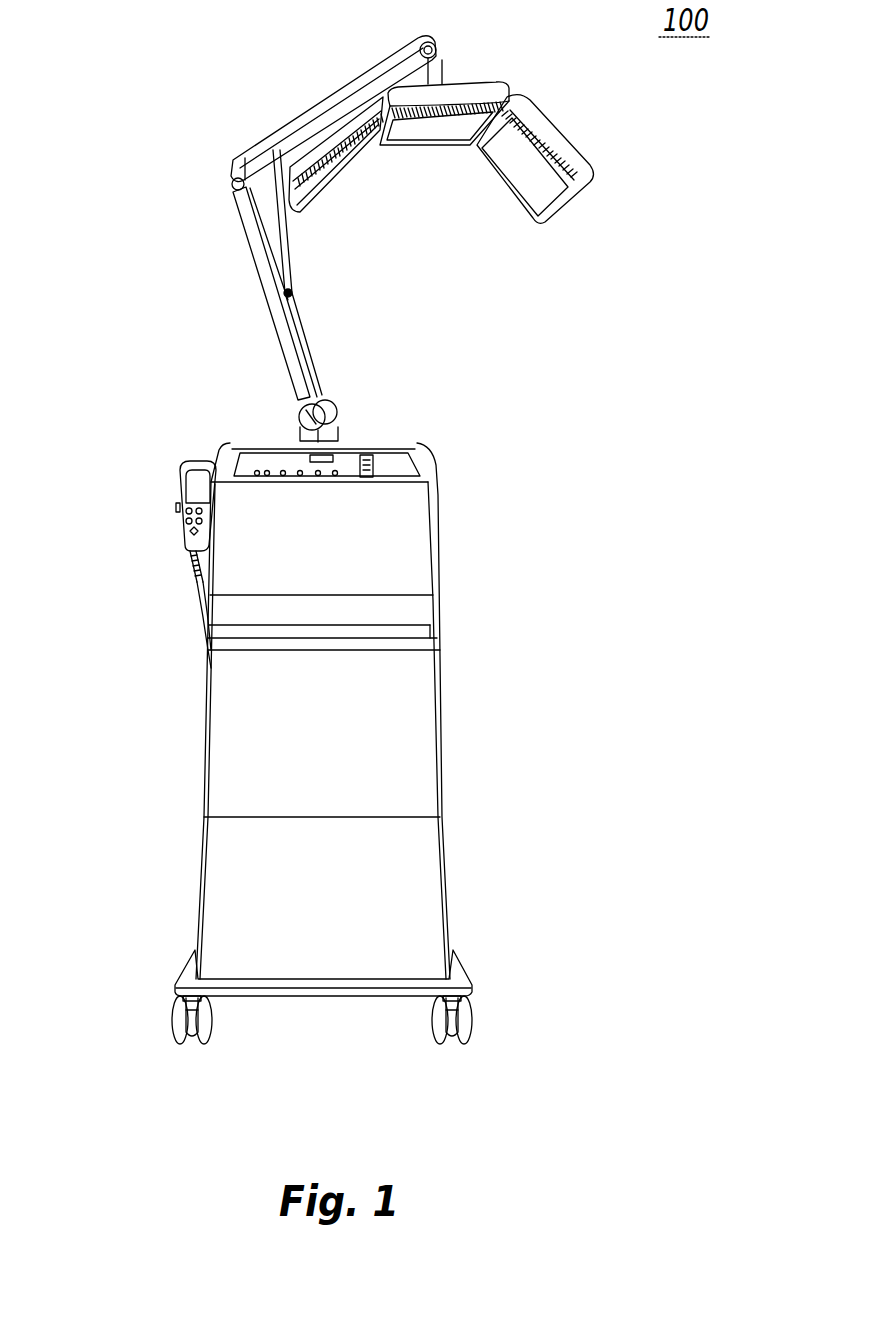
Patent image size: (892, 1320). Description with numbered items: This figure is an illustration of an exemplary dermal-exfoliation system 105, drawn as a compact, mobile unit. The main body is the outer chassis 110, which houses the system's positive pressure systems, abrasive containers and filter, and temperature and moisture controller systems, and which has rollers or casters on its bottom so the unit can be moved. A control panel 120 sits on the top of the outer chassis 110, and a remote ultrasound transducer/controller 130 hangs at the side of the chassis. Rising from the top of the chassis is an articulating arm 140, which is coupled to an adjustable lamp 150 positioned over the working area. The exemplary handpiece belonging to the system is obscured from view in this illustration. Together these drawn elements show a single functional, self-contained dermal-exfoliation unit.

The dermal-exfoliation system 105 is at (527, 642).
The outer chassis 110 is at (227, 737).
The control panel 120 is at (367, 443).
The remote ultrasound transducer/controller 130 is at (181, 483).
The articulating arm 140 is at (258, 264).
The adjustable lamp 150 is at (567, 128).